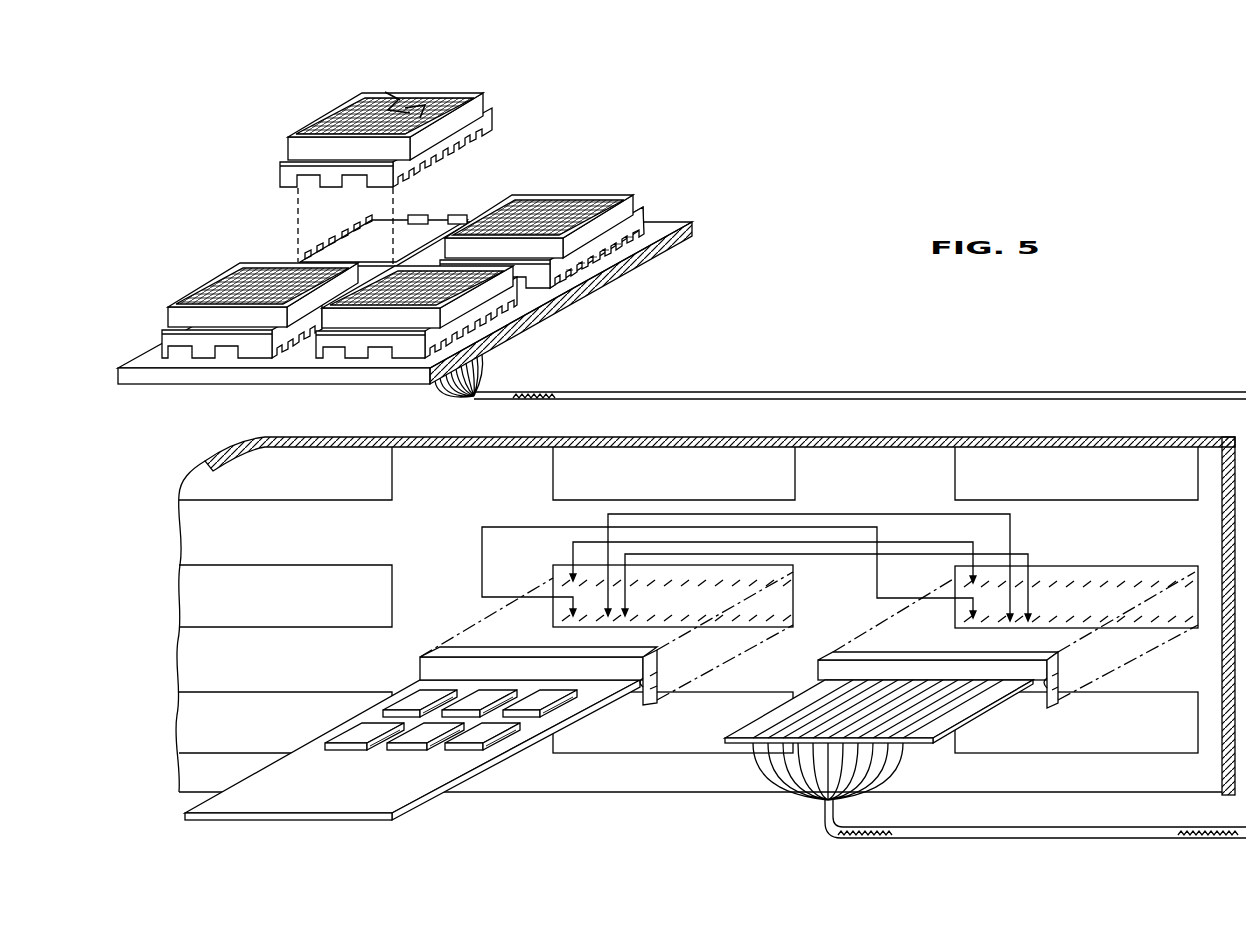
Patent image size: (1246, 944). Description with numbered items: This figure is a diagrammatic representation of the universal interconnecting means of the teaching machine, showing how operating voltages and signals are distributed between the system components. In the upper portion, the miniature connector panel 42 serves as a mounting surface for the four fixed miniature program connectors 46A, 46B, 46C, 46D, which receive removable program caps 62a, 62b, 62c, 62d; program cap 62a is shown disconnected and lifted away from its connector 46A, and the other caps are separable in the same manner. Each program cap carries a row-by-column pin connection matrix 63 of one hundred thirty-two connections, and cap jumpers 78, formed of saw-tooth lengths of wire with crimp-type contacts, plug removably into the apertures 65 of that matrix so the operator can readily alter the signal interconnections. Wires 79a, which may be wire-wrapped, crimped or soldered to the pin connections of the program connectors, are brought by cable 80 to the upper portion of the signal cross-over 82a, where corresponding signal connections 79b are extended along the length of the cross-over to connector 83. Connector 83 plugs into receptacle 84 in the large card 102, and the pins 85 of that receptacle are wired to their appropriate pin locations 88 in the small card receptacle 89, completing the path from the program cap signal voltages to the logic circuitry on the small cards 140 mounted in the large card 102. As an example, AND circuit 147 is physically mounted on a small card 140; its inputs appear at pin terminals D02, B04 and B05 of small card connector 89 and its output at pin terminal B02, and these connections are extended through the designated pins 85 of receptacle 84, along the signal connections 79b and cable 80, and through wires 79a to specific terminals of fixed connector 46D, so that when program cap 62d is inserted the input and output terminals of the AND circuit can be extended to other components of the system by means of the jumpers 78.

The miniature connector panel 42 is at (663, 249).
The miniature program connector 46A is at (420, 236).
The miniature program connector 46B is at (593, 258).
The miniature program connector 46C is at (227, 355).
The miniature program connector 46D is at (337, 355).
The program cap 62a is at (406, 125).
The program cap 62b is at (559, 234).
The program cap 62c is at (245, 337).
The program cap 62d is at (442, 338).
The pin connection matrix 63 is at (587, 208).
The apertures 65 is at (452, 103).
The cap jumper 78 is at (404, 99).
The wires 79a is at (488, 377).
The signal connections 79b is at (858, 772).
The cable 80 is at (725, 393).
The signal cross-over 82a is at (970, 722).
The connector 83 is at (907, 655).
The receptacle 84 is at (1076, 584).
The pins 85 is at (1115, 583).
The pin locations 88 is at (725, 585).
The small card receptacle 89 is at (688, 616).
The large card 102 is at (1175, 438).
The small card 140 is at (421, 733).
The AND circuit 147 is at (420, 697).
The pin terminal D02 is at (571, 580).
The pin terminal B02 is at (573, 616).
The pin terminal B04 is at (608, 616).
The pin terminal B05 is at (626, 614).